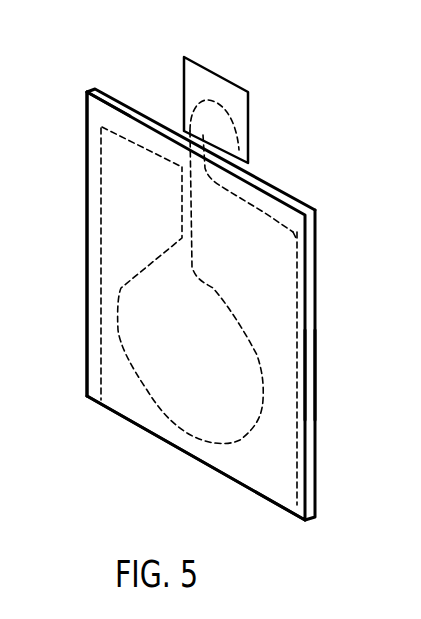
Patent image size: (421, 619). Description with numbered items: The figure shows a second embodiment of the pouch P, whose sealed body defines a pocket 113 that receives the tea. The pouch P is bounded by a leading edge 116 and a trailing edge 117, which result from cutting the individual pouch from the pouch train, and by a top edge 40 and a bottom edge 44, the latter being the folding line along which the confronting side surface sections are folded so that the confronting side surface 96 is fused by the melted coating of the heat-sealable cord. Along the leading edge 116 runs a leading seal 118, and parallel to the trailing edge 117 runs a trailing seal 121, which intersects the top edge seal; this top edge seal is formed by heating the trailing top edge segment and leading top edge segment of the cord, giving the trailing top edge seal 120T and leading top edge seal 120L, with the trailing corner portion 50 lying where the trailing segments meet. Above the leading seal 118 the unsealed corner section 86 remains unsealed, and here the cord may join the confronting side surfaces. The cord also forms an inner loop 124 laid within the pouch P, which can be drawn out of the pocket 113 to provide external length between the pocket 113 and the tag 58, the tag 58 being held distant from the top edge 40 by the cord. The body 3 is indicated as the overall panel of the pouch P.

The panel 3 is at (87, 152).
The top edge 40 is at (260, 177).
The bottom edge 44 is at (163, 453).
The trailing corner portion 50 is at (103, 99).
The tag 58 is at (226, 79).
The unsealed corner section 86 is at (298, 225).
The confronting side surface 96 is at (291, 348).
The pocket 113 is at (268, 267).
The leading edge 116 is at (312, 452).
The trailing edge 117 is at (87, 345).
The leading seal 118 is at (297, 302).
The top edge seal (trailing portion) 120T is at (158, 149).
The top edge seal (leading portion) 120L is at (279, 214).
The trailing seal 121 is at (101, 272).
The inner loop 124 is at (232, 452).
The pouch P is at (318, 192).